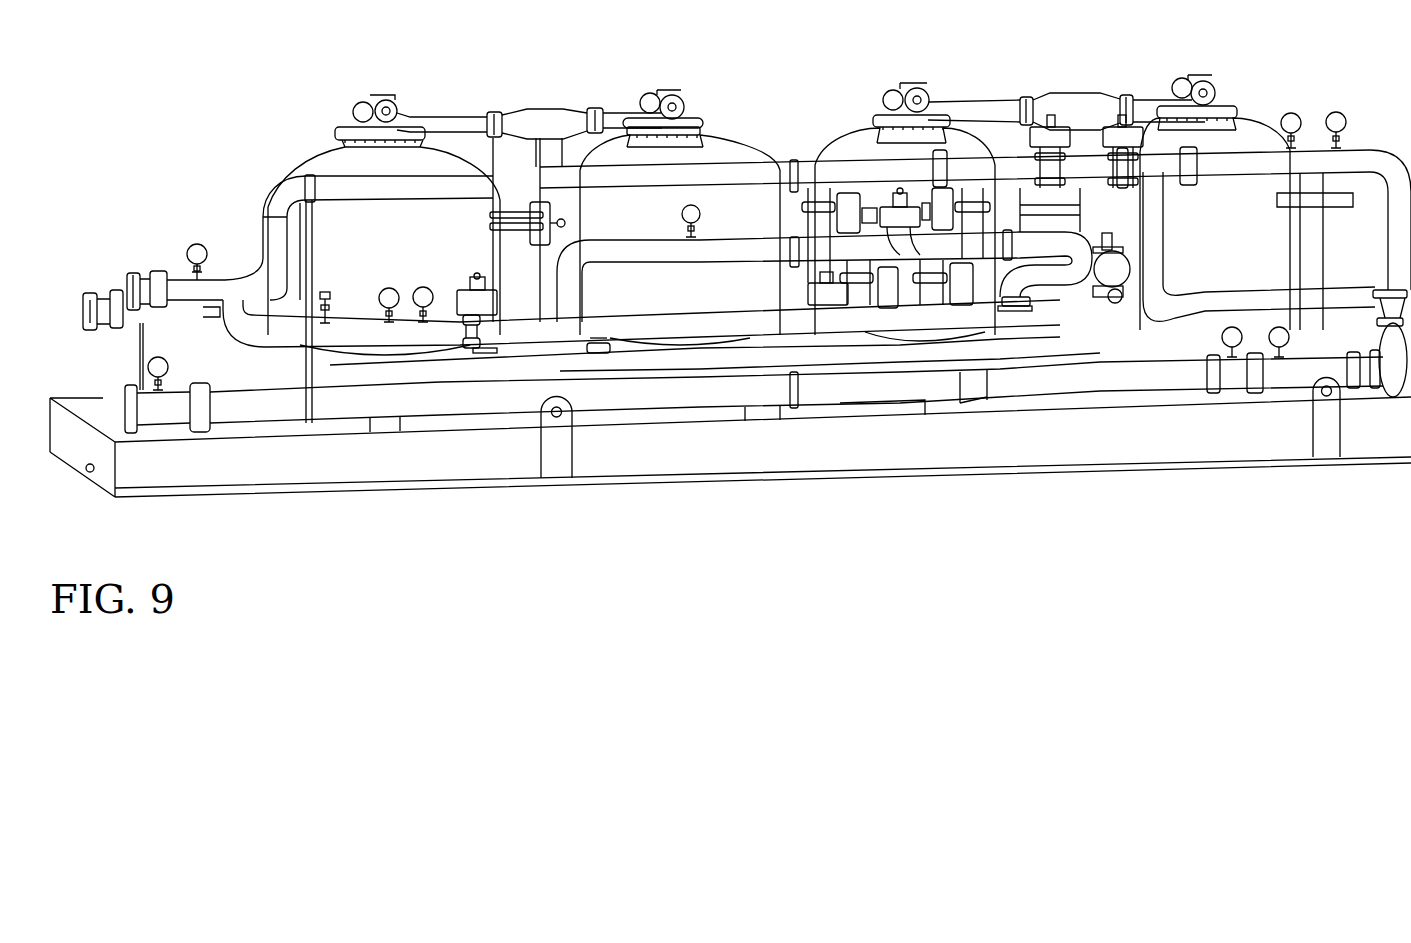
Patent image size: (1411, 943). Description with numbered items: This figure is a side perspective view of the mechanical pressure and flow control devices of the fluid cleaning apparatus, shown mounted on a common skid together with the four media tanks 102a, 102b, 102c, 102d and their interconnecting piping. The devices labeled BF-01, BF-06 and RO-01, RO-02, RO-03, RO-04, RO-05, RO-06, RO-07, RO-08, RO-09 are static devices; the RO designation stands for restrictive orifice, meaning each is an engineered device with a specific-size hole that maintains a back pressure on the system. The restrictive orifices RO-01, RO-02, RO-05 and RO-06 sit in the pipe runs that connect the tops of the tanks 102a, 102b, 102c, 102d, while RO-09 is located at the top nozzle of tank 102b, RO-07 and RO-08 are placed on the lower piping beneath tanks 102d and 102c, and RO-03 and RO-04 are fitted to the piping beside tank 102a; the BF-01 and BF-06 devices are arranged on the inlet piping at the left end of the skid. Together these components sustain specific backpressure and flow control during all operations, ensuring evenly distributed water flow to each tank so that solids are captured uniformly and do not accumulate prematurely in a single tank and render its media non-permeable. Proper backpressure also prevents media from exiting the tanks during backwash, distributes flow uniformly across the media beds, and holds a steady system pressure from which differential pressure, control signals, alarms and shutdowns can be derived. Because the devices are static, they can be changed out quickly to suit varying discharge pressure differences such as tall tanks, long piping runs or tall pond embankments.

The restrictive orifice RO-01 is at (1133, 95).
The restrictive orifice RO-02 is at (1020, 100).
The restrictive orifice RO-03 is at (1130, 295).
The restrictive orifice RO-04 is at (1022, 297).
The restrictive orifice RO-05 is at (598, 108).
The restrictive orifice RO-06 is at (487, 115).
The restrictive orifice RO-07 is at (493, 352).
The restrictive orifice RO-08 is at (607, 350).
The restrictive orifice RO-09 is at (877, 118).
The BF static flow control device BF-01 is at (98, 303).
The BF static flow control device BF-06 is at (143, 283).
The tank 102a is at (1243, 253).
The tank 102b is at (905, 234).
The tank 102c is at (672, 231).
The tank 102d is at (430, 245).